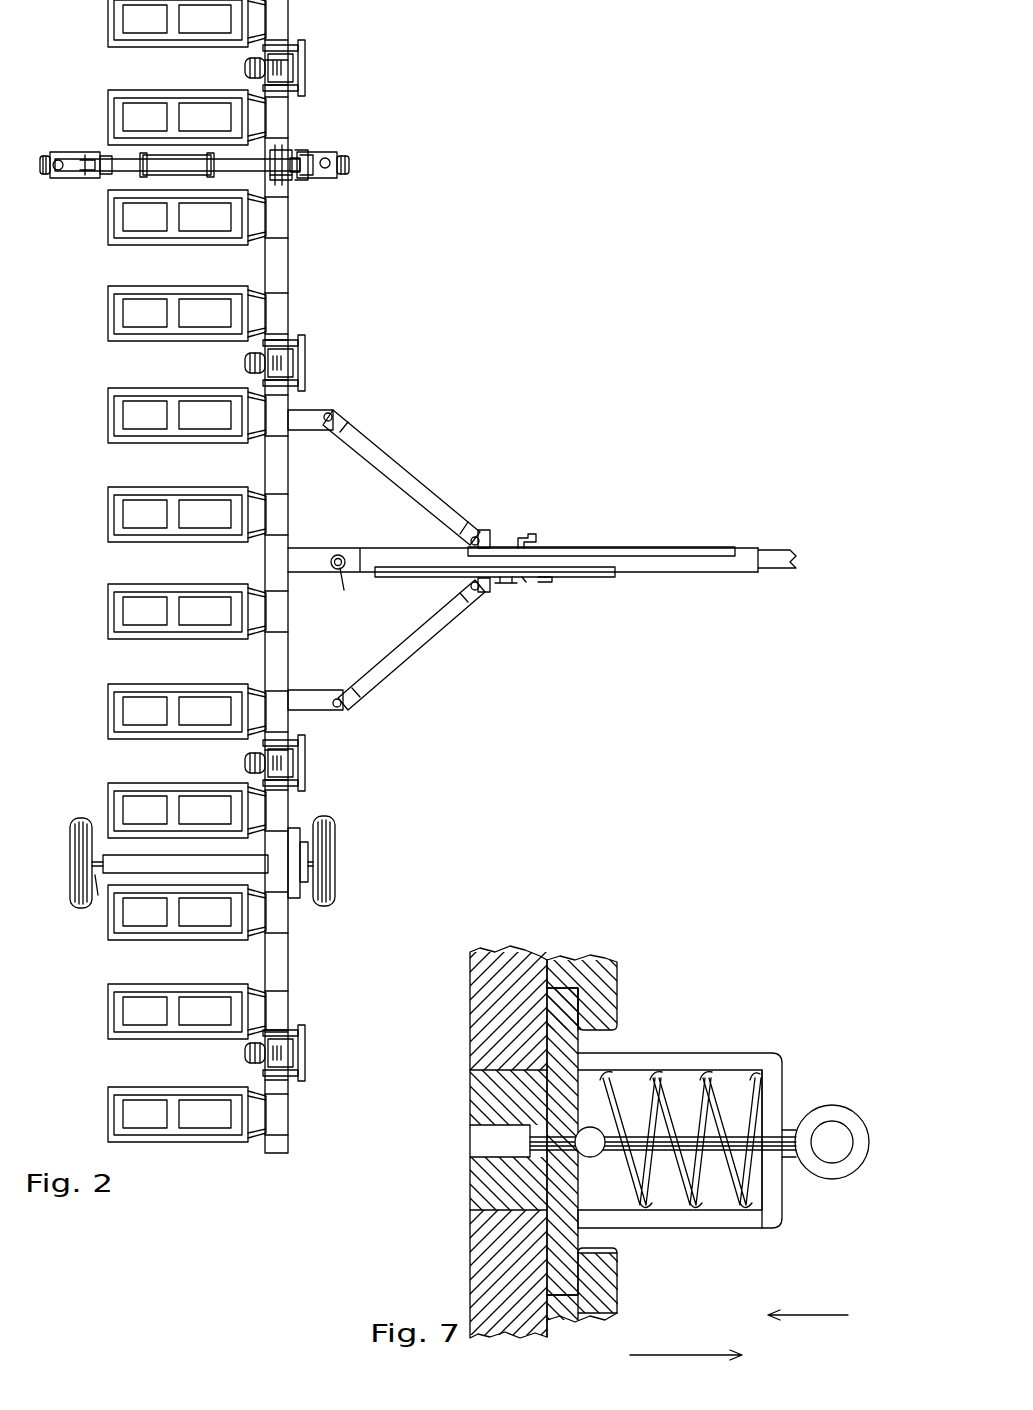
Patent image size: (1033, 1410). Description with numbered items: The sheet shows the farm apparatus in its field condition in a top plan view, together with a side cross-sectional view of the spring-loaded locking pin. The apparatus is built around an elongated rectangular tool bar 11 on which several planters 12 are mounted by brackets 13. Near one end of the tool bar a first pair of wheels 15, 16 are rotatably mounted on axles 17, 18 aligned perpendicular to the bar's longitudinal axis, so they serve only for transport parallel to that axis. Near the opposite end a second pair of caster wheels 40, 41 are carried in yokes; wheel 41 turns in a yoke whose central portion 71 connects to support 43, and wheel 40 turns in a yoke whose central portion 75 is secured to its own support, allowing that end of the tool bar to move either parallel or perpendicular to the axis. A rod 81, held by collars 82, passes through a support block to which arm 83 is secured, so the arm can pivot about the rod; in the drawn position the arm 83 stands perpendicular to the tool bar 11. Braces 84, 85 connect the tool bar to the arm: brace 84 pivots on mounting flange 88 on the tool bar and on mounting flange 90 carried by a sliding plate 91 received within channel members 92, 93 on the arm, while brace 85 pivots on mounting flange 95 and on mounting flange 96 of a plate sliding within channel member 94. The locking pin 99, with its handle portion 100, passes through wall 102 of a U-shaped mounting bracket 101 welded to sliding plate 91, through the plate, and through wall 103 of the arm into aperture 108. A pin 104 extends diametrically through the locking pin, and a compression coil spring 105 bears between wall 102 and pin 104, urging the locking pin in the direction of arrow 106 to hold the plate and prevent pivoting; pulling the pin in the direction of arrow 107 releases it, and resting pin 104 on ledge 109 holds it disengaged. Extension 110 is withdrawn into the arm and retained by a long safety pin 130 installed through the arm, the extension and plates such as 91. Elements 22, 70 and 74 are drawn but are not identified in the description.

In FIG. 2, the tool bar 11 is at (292, 958).
In FIG. 2, the planters 12 is at (108, 1018).
In FIG. 2, the brackets 13 is at (292, 987).
In FIG. 2, the wheel 15 is at (70, 898).
In FIG. 2, the wheel 16 is at (335, 870).
In FIG. 2, the axle 17 is at (97, 905).
In FIG. 2, the axle 18 is at (300, 828).
In FIG. 2, the wheel axle 22 is at (108, 855).
In FIG. 2, the caster wheel 40 is at (161, 144).
In FIG. 2, the caster wheel 41 is at (350, 160).
In FIG. 2, the support 43 is at (312, 152).
In FIG. 2, the pin 70 is at (315, 156).
In FIG. 2, the central portion 71 is at (332, 156).
In FIG. 2, the pivot pin 74 is at (61, 160).
In FIG. 2, the central portion 75 is at (52, 150).
In FIG. 2, the rod 81 is at (338, 552).
In FIG. 2, the collars 82 is at (344, 590).
In FIG. 2, the arm 83 is at (388, 548).
In FIG. 7, the arm 83 is at (518, 950).
In FIG. 2, the brace 84 is at (440, 642).
In FIG. 2, the brace 85 is at (383, 443).
In FIG. 2, the mounting flange 88 is at (350, 706).
In FIG. 2, the mounting flange 90 is at (492, 588).
In FIG. 7, the sliding plate 91 is at (580, 1243).
In FIG. 2, the channel member 92 is at (592, 580).
In FIG. 7, the channel member 92 is at (588, 958).
In FIG. 7, the channel member 93 is at (620, 1283).
In FIG. 2, the channel member 94 is at (608, 546).
In FIG. 2, the mounting flange 95 is at (318, 400).
In FIG. 2, the mounting flange 96 is at (490, 538).
In FIG. 7, the locking pin 99 is at (788, 1160).
In FIG. 7, the handle portion 100 is at (832, 1180).
In FIG. 7, the U-shaped mounting bracket 101 is at (668, 1055).
In FIG. 7, the wall 102 is at (772, 1212).
In FIG. 7, the wall 103 is at (475, 1030).
In FIG. 7, the pin 104 is at (598, 1110).
In FIG. 7, the compression coil spring 105 is at (603, 1195).
In FIG. 7, the arrow 106 is at (818, 1315).
In FIG. 7, the arrow 107 is at (660, 1355).
In FIG. 7, the aperture 108 is at (475, 1147).
In FIG. 7, the ledge 109 is at (760, 1062).
In FIG. 2, the extension 110 is at (785, 549).
In FIG. 2, the long safety pin 130 is at (532, 535).